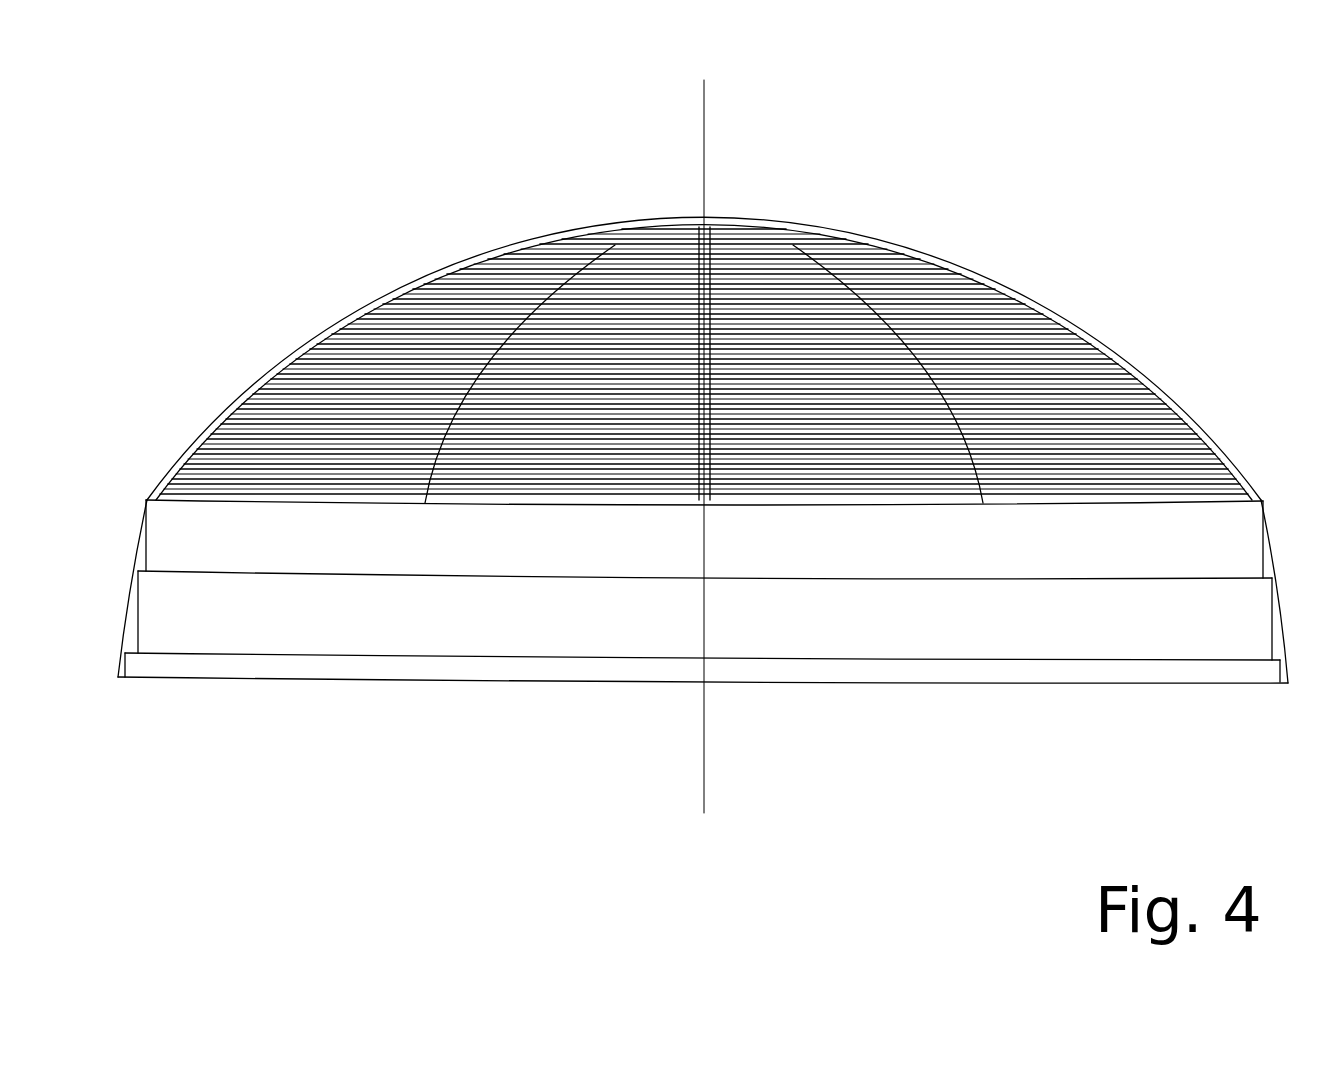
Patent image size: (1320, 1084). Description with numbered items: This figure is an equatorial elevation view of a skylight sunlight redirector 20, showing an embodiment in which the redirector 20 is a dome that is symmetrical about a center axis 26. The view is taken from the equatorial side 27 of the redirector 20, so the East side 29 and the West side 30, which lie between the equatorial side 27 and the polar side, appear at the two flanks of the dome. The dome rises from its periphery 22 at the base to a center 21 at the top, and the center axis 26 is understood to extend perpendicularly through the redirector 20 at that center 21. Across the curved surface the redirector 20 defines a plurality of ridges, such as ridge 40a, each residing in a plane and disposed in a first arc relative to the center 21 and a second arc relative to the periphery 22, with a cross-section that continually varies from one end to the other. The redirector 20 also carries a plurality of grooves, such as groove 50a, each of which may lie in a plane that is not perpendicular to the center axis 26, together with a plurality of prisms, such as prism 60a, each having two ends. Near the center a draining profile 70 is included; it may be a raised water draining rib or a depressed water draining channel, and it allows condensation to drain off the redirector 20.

The redirector 20 is at (370, 127).
The center 21 is at (704, 217).
The periphery 22 is at (212, 680).
The center axis 26 is at (704, 130).
The equatorial side 27 is at (678, 485).
The East side 29 is at (1240, 438).
The West side 30 is at (168, 432).
The ridge 40a is at (1200, 417).
The groove 50a is at (1133, 370).
The prism 60a is at (1087, 333).
The draining profile 70 is at (708, 470).